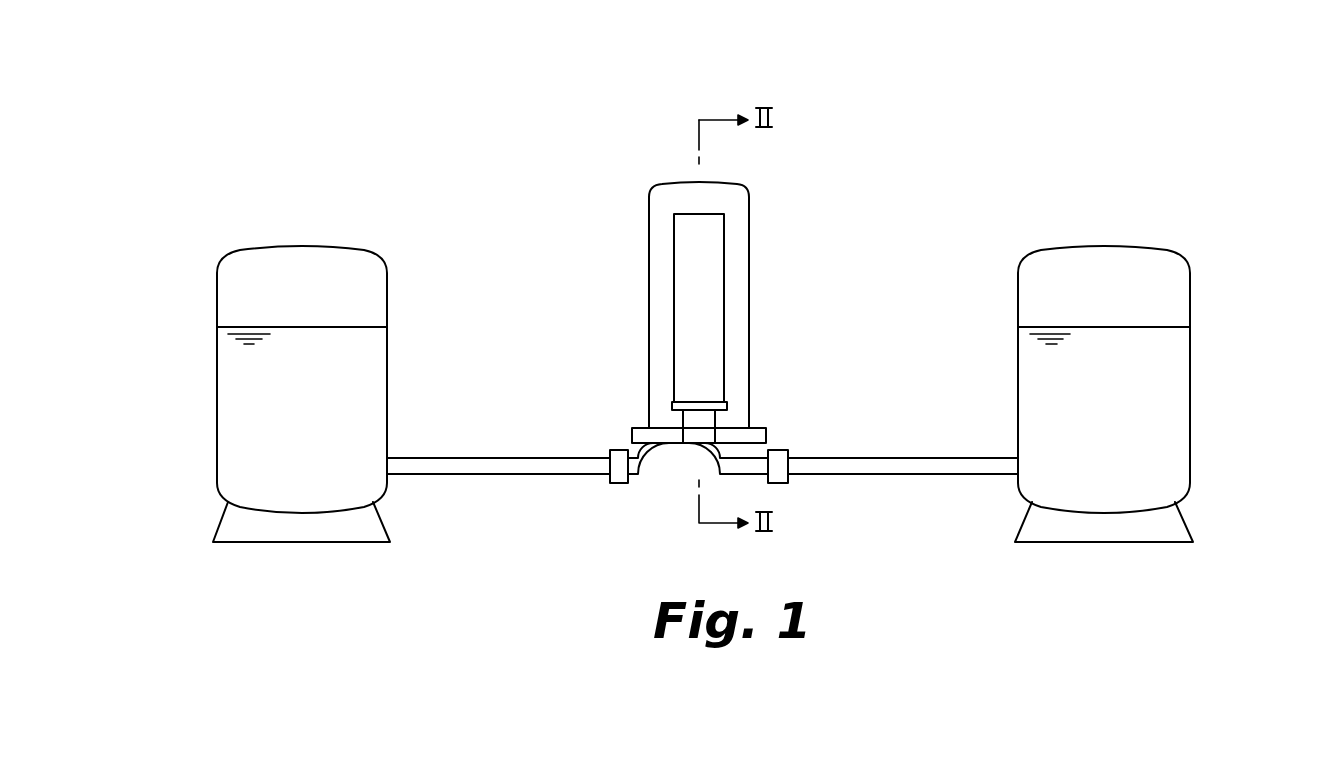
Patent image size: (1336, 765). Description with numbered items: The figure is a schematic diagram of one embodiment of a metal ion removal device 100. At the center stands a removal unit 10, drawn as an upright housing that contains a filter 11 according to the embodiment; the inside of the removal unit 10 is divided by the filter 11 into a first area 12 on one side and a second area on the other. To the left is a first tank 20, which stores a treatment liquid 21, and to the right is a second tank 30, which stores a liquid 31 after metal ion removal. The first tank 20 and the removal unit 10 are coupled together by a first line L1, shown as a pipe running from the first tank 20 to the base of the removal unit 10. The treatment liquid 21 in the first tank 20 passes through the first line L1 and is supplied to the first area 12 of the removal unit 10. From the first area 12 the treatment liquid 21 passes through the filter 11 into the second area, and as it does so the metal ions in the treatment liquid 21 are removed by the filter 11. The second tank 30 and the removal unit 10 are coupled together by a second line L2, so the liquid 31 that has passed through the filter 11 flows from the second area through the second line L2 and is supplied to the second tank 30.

The metal ion removal device 100 is at (1003, 127).
The removal unit 10 is at (649, 237).
The filter 11 is at (724, 268).
The first area 12 is at (661, 302).
The first tank 20 is at (217, 297).
The treatment liquid 21 is at (243, 413).
The second tank 30 is at (1190, 297).
The liquid 31 is at (1162, 413).
The first line L1 is at (481, 458).
The second line L2 is at (894, 458).